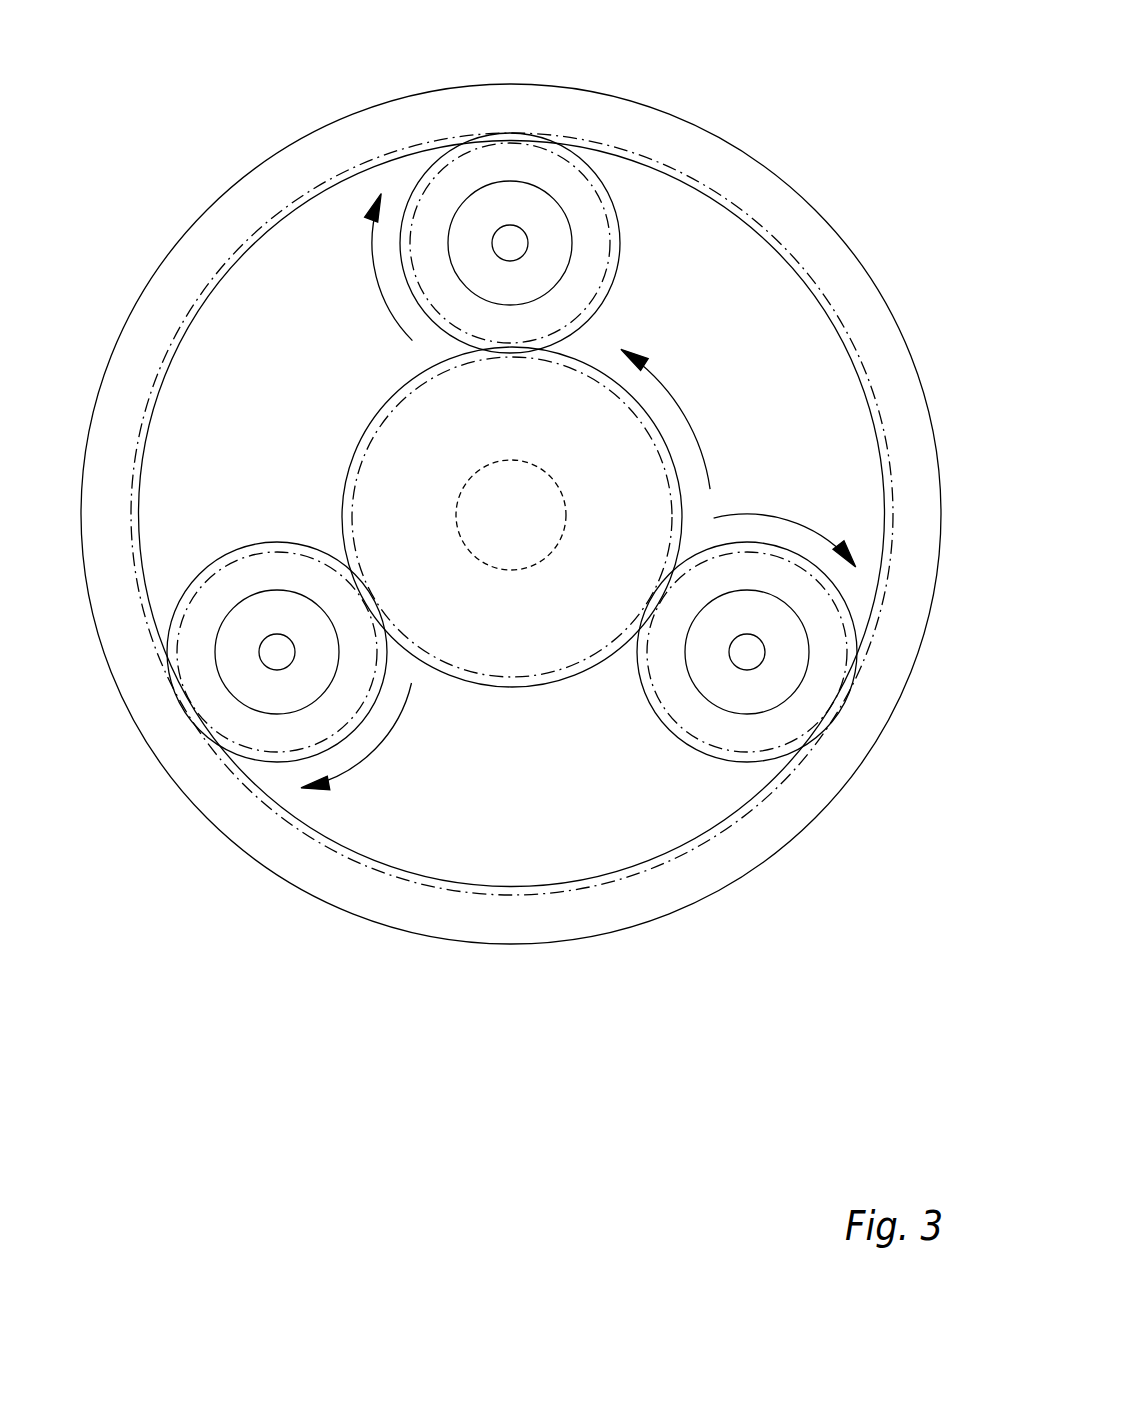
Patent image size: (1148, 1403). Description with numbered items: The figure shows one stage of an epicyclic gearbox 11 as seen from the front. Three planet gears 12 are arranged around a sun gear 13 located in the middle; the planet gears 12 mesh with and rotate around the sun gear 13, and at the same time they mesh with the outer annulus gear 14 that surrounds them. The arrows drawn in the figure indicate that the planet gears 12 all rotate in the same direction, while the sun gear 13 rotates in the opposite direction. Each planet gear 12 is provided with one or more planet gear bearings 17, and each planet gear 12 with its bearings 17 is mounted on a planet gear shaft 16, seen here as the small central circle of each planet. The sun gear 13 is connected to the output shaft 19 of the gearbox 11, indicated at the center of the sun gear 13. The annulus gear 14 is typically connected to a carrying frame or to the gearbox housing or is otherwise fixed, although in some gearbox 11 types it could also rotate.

The epicyclic gearbox 11 is at (248, 916).
The planet gear 12 is at (583, 212).
The sun gear 13 is at (413, 472).
The annulus gear 14 is at (797, 229).
The planet gear shaft 16 is at (509, 238).
The planet gear bearing 17 is at (478, 255).
The output shaft 19 is at (512, 525).